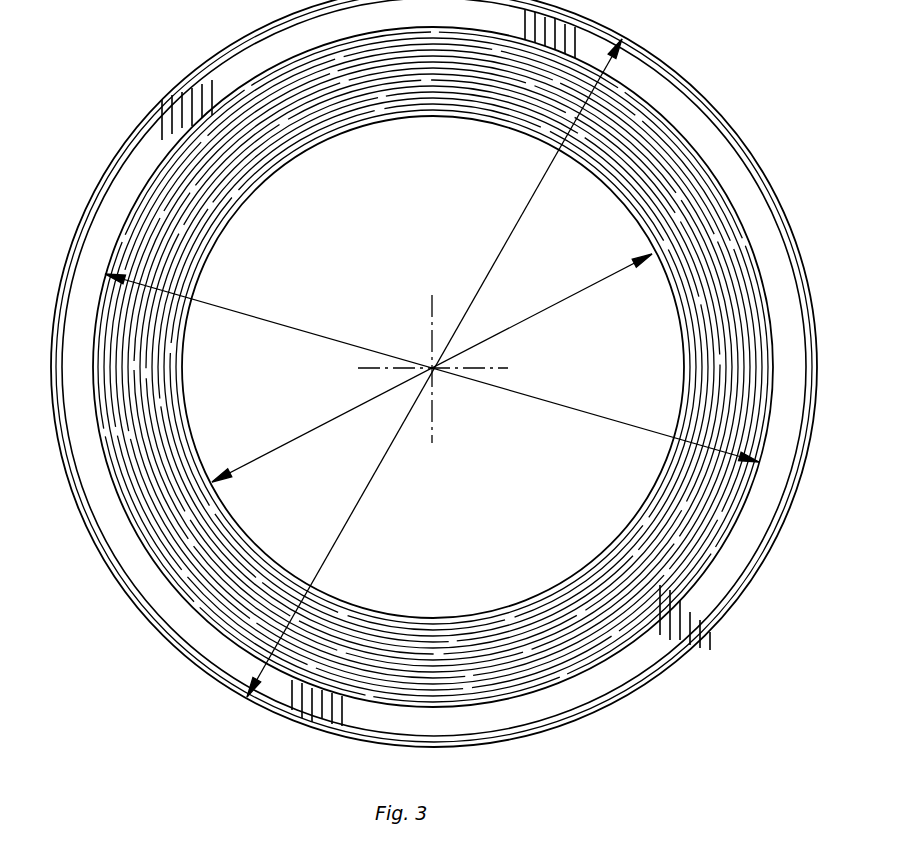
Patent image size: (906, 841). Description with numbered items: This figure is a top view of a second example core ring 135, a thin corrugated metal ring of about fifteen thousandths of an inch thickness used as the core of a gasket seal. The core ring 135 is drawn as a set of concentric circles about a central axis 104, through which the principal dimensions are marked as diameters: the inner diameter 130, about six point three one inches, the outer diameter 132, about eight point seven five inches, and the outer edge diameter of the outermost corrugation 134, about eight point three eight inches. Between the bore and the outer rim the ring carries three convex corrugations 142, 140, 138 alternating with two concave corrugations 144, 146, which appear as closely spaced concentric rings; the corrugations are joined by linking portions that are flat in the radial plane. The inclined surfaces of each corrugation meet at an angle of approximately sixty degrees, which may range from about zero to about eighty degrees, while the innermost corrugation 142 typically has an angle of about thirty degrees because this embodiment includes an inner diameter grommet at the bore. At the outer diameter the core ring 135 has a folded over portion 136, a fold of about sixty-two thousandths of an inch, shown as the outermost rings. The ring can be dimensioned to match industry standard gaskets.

The central axis 104 is at (432, 367).
The inner diameter 130 is at (317, 428).
The outer diameter 132 is at (527, 202).
The outer edge diameter of the outermost corrugation 134 is at (253, 317).
The core ring 135 is at (682, 65).
The folded over portion 136 is at (558, 722).
The convex corrugation 138 is at (592, 660).
The convex corrugation 140 is at (622, 597).
The convex corrugation 142 is at (650, 515).
The concave corrugation 144 is at (240, 615).
The concave corrugation 146 is at (237, 565).